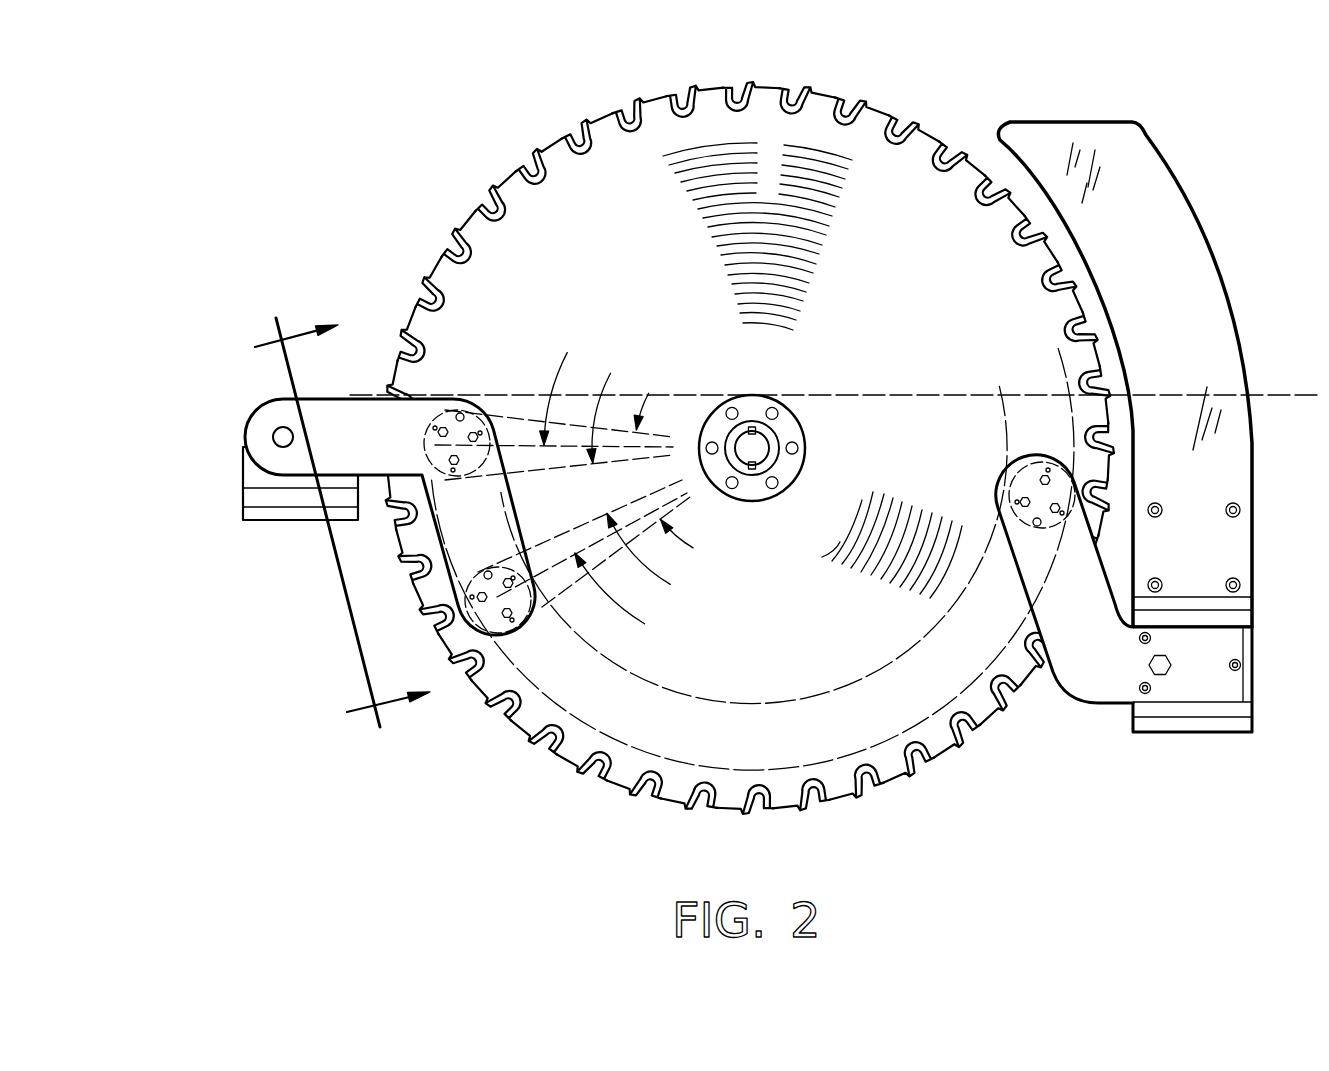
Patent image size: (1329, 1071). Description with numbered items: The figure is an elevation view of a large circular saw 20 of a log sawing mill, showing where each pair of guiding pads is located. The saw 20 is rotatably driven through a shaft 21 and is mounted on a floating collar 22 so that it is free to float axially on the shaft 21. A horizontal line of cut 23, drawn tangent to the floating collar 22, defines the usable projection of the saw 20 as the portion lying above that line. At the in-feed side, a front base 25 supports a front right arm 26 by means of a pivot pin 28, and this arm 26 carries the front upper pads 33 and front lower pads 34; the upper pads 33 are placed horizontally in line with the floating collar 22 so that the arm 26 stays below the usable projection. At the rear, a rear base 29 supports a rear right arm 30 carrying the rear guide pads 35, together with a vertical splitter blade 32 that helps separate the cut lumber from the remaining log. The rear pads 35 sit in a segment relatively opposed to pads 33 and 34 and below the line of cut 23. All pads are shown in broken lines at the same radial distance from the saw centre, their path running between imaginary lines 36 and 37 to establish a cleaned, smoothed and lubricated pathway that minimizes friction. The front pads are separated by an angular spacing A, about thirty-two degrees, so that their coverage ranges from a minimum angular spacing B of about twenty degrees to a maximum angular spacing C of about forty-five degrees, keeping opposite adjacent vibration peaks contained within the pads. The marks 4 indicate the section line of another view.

The circular saw 20 is at (602, 123).
The shaft 21 is at (760, 447).
The floating collar 22 is at (738, 402).
The horizontal line of cut 23 is at (900, 393).
The front base 25 is at (262, 490).
The front right arm 26 is at (361, 451).
The pivot pin 28 is at (280, 436).
The rear base 29 is at (1227, 720).
The rear right arm 30 is at (1088, 667).
The splitter blade 32 is at (1152, 222).
The front upper pads 33 is at (460, 410).
The front lower pads 34 is at (522, 607).
The rear guide pads 35 is at (1012, 485).
The imaginary line 36 is at (793, 700).
The imaginary line 37 is at (868, 748).
The angular spacing A is at (623, 602).
The minimum angular spacing B is at (651, 562).
The maximum angular spacing C is at (688, 547).
The section line 4- 4 is at (348, 508).